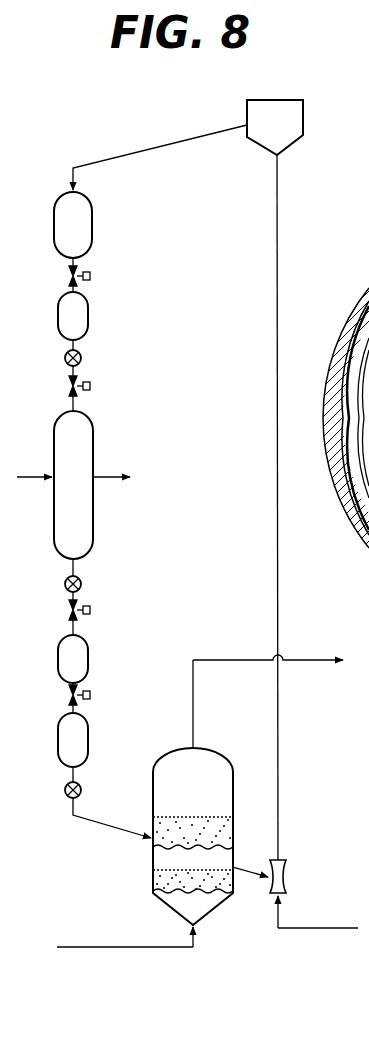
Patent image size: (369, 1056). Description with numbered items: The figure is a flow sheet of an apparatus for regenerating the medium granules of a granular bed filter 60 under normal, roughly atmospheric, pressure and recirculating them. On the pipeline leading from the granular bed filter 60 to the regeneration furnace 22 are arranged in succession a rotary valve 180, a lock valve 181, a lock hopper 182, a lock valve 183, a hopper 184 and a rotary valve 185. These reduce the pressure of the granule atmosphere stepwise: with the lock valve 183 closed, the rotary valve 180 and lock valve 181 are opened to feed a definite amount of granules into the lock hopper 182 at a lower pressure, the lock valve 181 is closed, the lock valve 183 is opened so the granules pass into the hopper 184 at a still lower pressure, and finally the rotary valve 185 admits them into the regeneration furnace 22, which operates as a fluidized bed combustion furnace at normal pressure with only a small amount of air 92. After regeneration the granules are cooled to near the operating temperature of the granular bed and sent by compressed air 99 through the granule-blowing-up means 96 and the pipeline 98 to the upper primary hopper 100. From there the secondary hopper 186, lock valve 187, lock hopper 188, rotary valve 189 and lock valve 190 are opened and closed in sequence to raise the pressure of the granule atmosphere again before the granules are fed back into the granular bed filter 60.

The primary hopper 100 is at (248, 114).
The secondary hopper 186 is at (100, 213).
The lock valve 187 is at (91, 272).
The lock hopper 188 is at (88, 316).
The rotary valve 189 is at (90, 352).
The lock valve 190 is at (90, 386).
The granular bed filter 60 is at (94, 440).
The rotary valve 180 is at (80, 580).
The lock valve 181 is at (91, 607).
The lock hopper 182 is at (88, 656).
The lock valve 183 is at (91, 692).
The hopper 184 is at (88, 734).
The rotary valve 185 is at (80, 787).
The regeneration furnace 22 is at (233, 769).
The pipeline 98 is at (278, 433).
The granule-blowing-up means 96 is at (285, 872).
The air 92 is at (75, 947).
The compressed air 99 is at (327, 928).